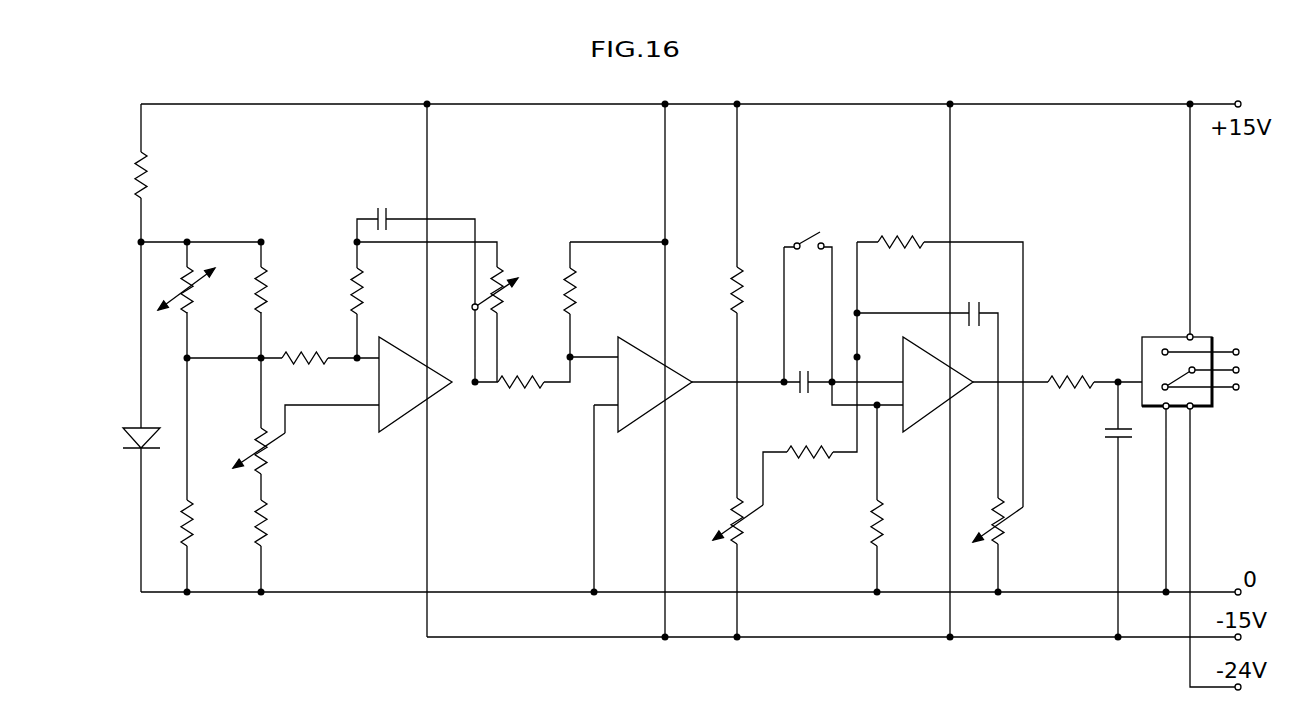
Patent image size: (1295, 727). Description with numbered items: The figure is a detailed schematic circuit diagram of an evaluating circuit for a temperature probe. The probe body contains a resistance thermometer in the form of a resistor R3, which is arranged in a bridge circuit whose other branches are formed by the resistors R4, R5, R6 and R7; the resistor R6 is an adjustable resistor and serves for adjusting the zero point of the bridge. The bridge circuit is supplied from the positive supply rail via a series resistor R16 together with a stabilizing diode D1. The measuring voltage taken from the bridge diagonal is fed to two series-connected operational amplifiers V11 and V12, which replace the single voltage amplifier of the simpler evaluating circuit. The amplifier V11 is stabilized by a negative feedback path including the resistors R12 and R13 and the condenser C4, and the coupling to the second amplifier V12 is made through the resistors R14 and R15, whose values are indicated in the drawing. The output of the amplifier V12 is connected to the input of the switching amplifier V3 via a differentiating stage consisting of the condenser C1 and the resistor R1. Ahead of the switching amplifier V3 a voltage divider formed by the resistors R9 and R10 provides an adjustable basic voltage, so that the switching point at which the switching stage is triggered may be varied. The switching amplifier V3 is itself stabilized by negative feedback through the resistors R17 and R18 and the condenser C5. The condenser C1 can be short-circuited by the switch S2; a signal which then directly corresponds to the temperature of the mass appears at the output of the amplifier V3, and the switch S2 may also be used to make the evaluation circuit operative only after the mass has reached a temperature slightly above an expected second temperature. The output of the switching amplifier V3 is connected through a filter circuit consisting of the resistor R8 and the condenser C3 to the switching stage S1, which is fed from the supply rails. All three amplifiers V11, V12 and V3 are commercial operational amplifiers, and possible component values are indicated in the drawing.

The series resistor R16 is at (467, 321).
The resistor R3 is at (196, 305).
The resistor R4 is at (265, 291).
The resistor R12 is at (354, 296).
The condenser C4 is at (392, 210).
The resistor R7 is at (296, 455).
The adjustable resistor R6 is at (271, 451).
The resistor R5 is at (189, 525).
The stabilizing diode D1 is at (133, 421).
The operational amplifier V11 is at (415, 396).
The resistor R13 is at (515, 290).
The resistor R14 is at (524, 385).
The resistor R15 is at (603, 285).
The operational amplifier V12 is at (655, 397).
The voltage divider resistor R10 is at (714, 301).
The voltage divider resistor R9 is at (719, 529).
The switch S2 is at (808, 226).
The condenser C1 is at (804, 383).
The resistor R17 is at (899, 240).
The condenser C5 is at (985, 313).
The switching amplifier V3 is at (938, 394).
The resistor R1 is at (879, 522).
The resistor R18 is at (1023, 525).
The resistor R8 is at (1077, 381).
The condenser C3 is at (1075, 447).
The switching stage S1 is at (1190, 356).